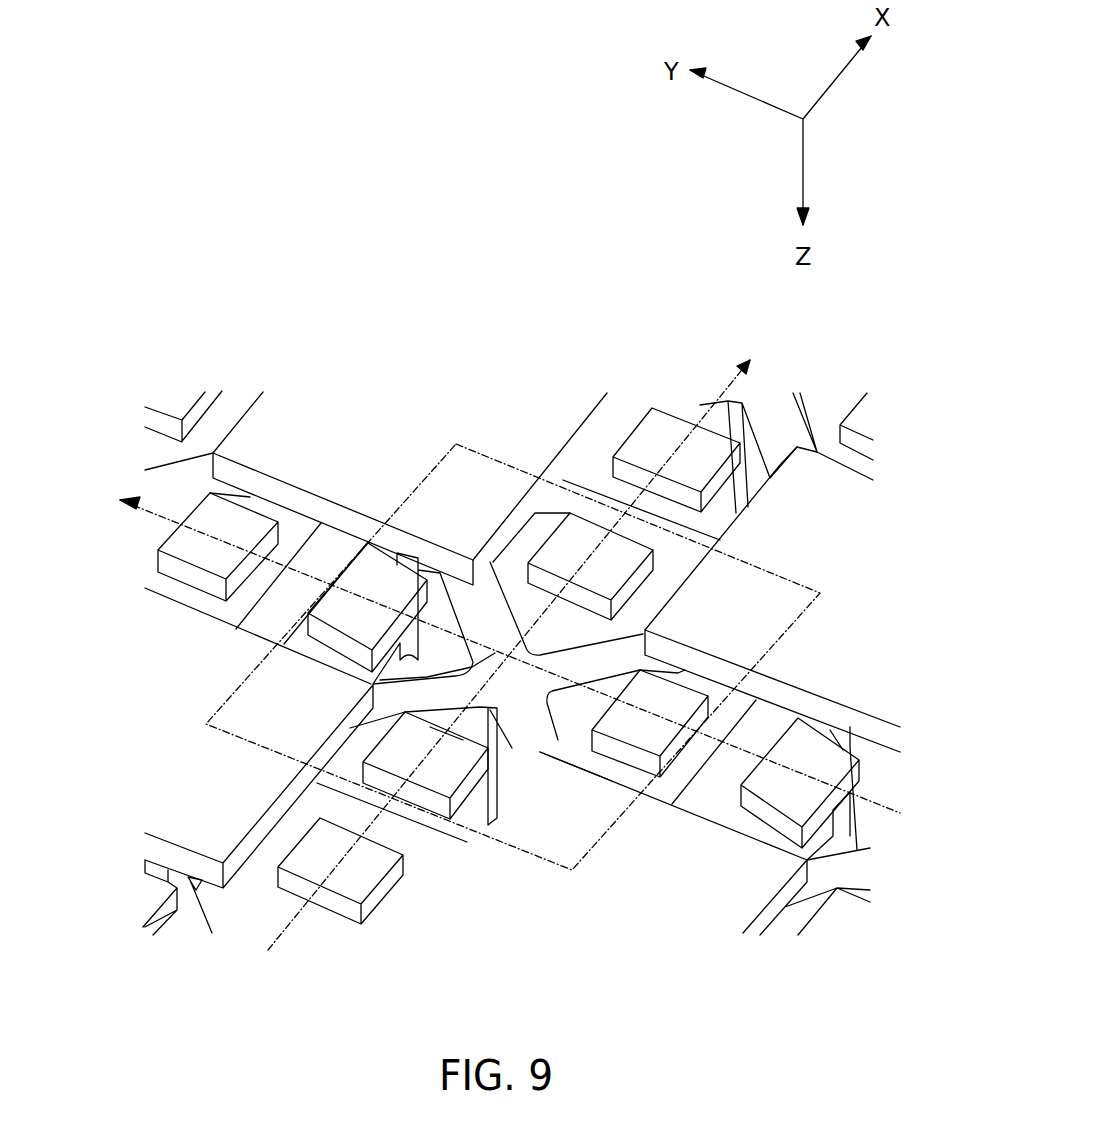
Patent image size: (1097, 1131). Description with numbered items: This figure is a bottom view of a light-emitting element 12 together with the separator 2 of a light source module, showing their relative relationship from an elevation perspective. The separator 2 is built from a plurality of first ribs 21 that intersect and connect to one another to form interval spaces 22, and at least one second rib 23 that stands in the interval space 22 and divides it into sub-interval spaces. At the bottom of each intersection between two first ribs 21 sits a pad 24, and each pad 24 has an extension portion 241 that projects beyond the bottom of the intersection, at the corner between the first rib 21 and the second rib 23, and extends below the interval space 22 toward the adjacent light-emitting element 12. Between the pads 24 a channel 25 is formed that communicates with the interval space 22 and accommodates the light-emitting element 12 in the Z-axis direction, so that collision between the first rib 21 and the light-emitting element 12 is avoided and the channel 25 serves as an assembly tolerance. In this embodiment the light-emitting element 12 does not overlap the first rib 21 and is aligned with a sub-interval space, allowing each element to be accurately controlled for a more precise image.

The separator 2 is at (562, 272).
The light-emitting element 12 is at (573, 543).
The first rib 21 is at (293, 578).
The interval space 22 is at (612, 777).
The second rib 23 is at (590, 668).
The pad 24 is at (467, 537).
The extension portion 241 is at (347, 687).
The channel 25 is at (533, 674).